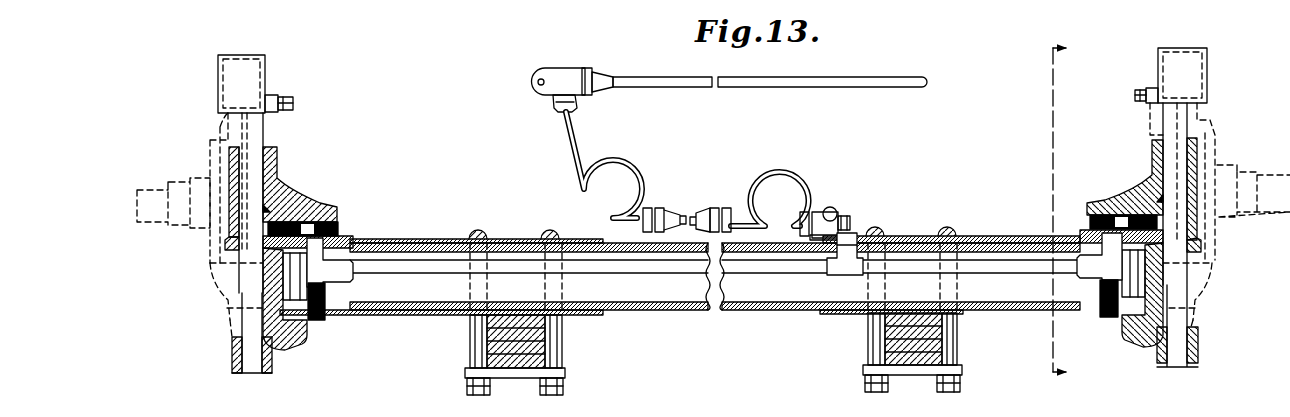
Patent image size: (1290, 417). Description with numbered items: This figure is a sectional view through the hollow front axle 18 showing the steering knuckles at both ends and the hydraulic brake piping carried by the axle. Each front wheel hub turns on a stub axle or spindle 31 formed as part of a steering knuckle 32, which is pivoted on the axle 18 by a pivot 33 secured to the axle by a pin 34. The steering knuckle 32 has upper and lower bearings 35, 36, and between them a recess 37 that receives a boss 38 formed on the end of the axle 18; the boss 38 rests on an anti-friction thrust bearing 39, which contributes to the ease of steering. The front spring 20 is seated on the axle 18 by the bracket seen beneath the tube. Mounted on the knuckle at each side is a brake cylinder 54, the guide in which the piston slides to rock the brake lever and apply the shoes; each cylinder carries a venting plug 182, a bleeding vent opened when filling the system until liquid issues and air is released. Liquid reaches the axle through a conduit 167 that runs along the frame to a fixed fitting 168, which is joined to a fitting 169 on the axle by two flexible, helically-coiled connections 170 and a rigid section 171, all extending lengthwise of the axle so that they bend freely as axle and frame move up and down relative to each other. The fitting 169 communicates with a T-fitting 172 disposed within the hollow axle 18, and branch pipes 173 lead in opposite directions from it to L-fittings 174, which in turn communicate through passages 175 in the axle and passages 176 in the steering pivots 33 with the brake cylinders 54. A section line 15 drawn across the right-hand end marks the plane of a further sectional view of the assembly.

The section line 15- 15 is at (1057, 214).
The front axle 18 is at (672, 310).
The front spring 20 is at (518, 352).
The stub axle or spindle 31 is at (165, 187).
The steering knuckle 32 is at (214, 253).
The pivot 33 is at (255, 174).
The pin 34 is at (266, 208).
The upper bearing 35 is at (272, 128).
The lower bearing 36 is at (238, 325).
The recess 37 is at (222, 140).
The boss 38 is at (232, 172).
The anti-friction thrust bearing 39 is at (225, 265).
The cylinder 54 is at (254, 70).
The conduit 167 is at (826, 80).
The fixed fitting 168 is at (558, 70).
The fitting 169 is at (820, 214).
The flexible helically-coiled connection 170 is at (620, 166).
The rigid section 171 is at (681, 213).
The T-fitting 172 is at (846, 270).
The branch pipe 173 is at (603, 269).
The L-fitting 174 is at (337, 278).
The passage in the axle 175 is at (325, 210).
The passage in the steering pivot 176 is at (265, 153).
The venting plug 182 is at (293, 103).